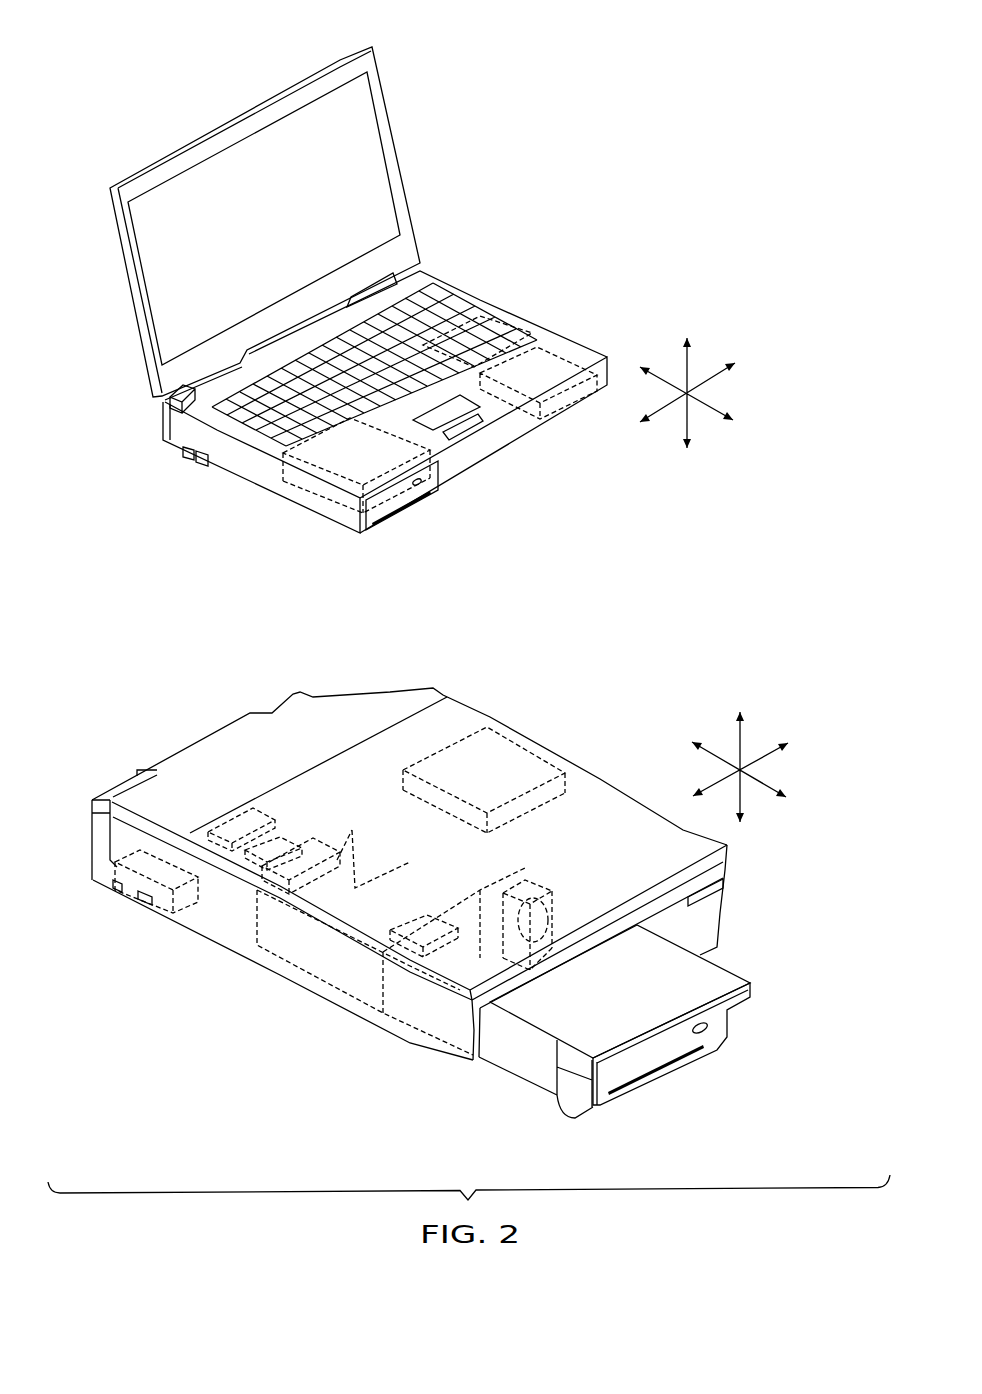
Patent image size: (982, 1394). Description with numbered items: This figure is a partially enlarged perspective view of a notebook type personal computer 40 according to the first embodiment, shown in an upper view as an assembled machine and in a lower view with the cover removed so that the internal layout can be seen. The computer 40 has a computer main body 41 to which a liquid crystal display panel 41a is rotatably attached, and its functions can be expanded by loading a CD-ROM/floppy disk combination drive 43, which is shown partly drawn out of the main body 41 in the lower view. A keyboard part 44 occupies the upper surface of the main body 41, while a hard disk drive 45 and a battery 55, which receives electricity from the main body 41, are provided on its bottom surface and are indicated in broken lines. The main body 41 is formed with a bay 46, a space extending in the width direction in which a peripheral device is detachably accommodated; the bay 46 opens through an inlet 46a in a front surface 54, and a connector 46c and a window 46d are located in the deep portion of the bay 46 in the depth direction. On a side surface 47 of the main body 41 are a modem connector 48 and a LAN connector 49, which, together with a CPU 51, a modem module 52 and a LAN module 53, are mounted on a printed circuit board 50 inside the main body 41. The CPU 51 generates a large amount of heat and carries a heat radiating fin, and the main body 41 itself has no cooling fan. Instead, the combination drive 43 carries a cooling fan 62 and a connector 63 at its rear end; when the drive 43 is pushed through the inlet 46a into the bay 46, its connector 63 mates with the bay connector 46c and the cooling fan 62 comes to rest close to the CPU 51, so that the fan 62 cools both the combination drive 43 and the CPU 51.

The notebook type personal computer 40 is at (508, 72).
The computer main body 41 is at (466, 275).
The liquid crystal display panel 41a is at (412, 177).
The combination drive 43 is at (388, 523).
The keyboard part 44 is at (468, 310).
The hard disk drive 45 is at (573, 341).
The bay 46 is at (294, 493).
The inlet 46a is at (483, 1033).
The connector 46c is at (318, 852).
The window 46d is at (378, 827).
The side surface 47 is at (243, 484).
The modem connector 48 is at (197, 465).
The LAN connector 49 is at (173, 451).
The printed circuit board 50 is at (350, 757).
The CPU 51 is at (477, 750).
The modem module 52 is at (283, 843).
The LAN module 53 is at (233, 823).
The front surface 54 is at (476, 462).
The battery 55 is at (510, 303).
The cooling fan 62 is at (540, 877).
The connector 63 is at (423, 918).